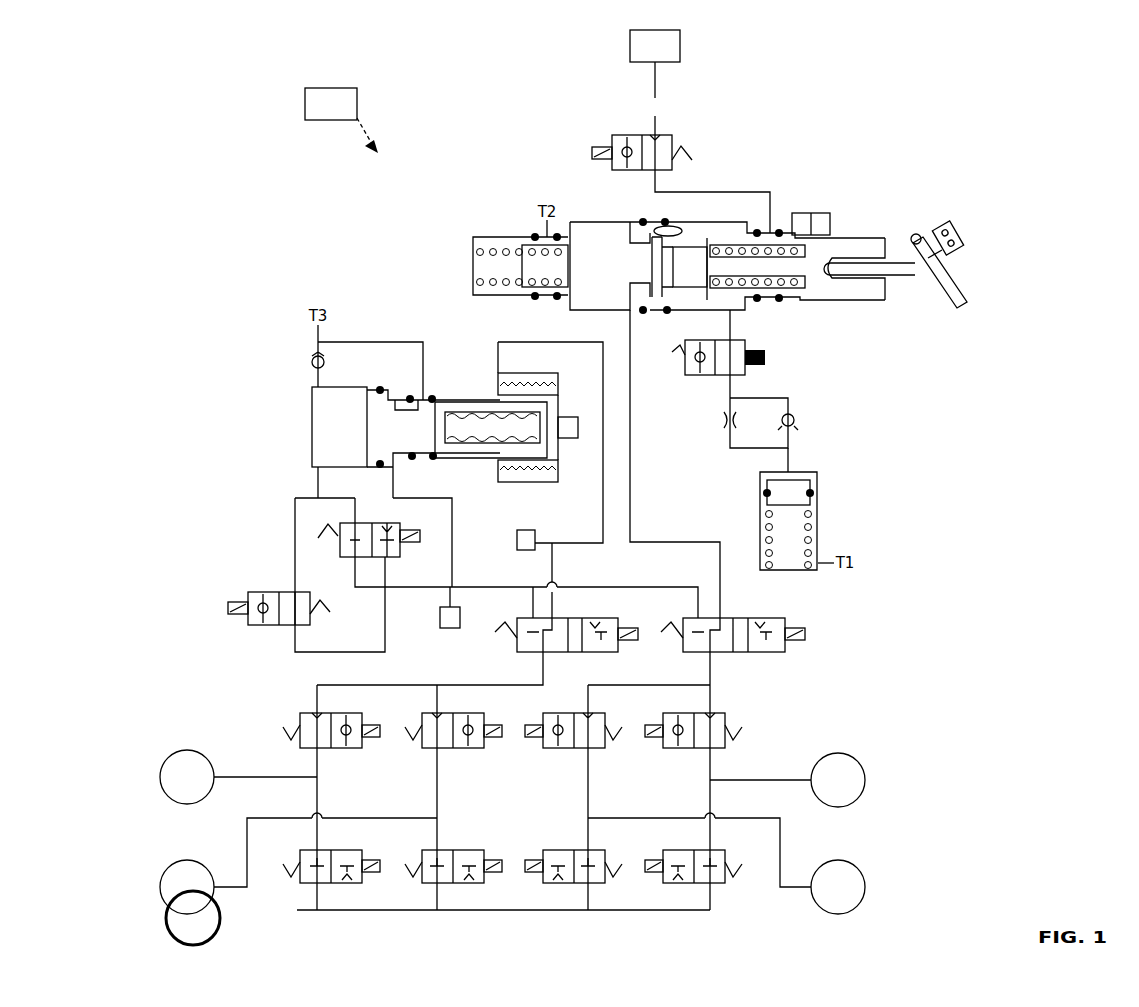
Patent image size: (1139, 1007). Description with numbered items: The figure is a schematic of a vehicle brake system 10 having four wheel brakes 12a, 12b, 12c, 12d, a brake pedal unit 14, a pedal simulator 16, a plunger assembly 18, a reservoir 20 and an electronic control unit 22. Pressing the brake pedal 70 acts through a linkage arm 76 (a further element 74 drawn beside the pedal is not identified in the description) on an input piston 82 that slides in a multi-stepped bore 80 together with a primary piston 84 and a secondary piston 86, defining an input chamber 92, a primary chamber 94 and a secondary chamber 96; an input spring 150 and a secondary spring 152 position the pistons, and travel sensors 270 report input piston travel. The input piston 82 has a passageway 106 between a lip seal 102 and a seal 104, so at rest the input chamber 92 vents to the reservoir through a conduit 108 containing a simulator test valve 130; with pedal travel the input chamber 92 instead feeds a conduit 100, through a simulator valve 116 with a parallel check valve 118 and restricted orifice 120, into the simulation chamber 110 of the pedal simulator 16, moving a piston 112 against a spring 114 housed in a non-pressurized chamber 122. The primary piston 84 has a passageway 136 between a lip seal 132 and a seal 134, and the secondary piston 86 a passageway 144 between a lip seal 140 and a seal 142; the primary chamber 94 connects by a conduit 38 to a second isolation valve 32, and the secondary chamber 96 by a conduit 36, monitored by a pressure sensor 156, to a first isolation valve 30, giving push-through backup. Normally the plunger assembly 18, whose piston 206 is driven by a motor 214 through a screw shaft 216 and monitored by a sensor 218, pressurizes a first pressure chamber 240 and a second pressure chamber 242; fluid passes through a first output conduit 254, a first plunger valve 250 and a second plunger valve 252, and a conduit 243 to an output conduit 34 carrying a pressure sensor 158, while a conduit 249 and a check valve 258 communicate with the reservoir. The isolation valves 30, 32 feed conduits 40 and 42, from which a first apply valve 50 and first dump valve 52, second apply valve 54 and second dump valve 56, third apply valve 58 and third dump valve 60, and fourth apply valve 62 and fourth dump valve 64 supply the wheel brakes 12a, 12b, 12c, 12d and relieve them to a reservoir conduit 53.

The brake system 10 is at (236, 144).
The wheel brake 12a is at (180, 750).
The wheel brake 12b is at (170, 862).
The wheel brake 12c is at (855, 862).
The wheel brake 12d is at (852, 755).
The brake pedal unit 14 is at (910, 144).
The pedal simulator 16 is at (826, 478).
The plunger assembly 18 is at (278, 369).
The reservoir 20 is at (630, 50).
The electronic control unit 22 is at (357, 100).
The first isolation valve 30 is at (604, 654).
The second isolation valve 32 is at (772, 654).
The output conduit 34 is at (634, 586).
The conduit 36 is at (603, 472).
The conduit 38 is at (632, 455).
The conduit 40 is at (540, 672).
The conduit 42 is at (712, 678).
The first apply valve 50 is at (310, 713).
The first dump valve 52 is at (350, 885).
The reservoir conduit 53 is at (398, 912).
The second apply valve 54 is at (432, 713).
The second dump valve 56 is at (480, 885).
The third apply valve 58 is at (578, 713).
The third dump valve 60 is at (595, 885).
The fourth apply valve 62 is at (728, 713).
The fourth dump valve 64 is at (720, 885).
The brake pedal 70 is at (950, 283).
The pedal pivot 74 is at (952, 228).
The linkage arm 76 is at (882, 276).
The multi-stepped bore 80 is at (600, 238).
The input piston 82 is at (862, 240).
The primary piston 84 is at (712, 240).
The secondary piston 86 is at (592, 267).
The input chamber 92 is at (690, 240).
The primary chamber 94 is at (613, 235).
The secondary chamber 96 is at (490, 270).
The conduit 100 is at (730, 392).
The lip seal 102 is at (758, 302).
The seal 104 is at (781, 302).
The passageway 106 is at (782, 234).
The conduit 108 is at (690, 190).
The simulation chamber 110 is at (800, 472).
The piston 112 is at (806, 502).
The spring 114 is at (815, 540).
The simulator valve 116 is at (746, 372).
The check valve 118 is at (795, 418).
The restricted orifice 120 is at (725, 432).
The non-pressurized chamber 122 is at (790, 565).
The simulator test valve 130 is at (612, 135).
The lip seal 132 is at (643, 318).
The seal 134 is at (670, 313).
The passageway 136 is at (664, 228).
The lip seal 140 is at (530, 300).
The seal 142 is at (558, 300).
The passageway 144 is at (492, 254).
The input spring 150 is at (787, 284).
The secondary spring 152 is at (478, 237).
The pressure sensor 156 is at (517, 532).
The pressure sensor 158 is at (442, 630).
The piston 206 is at (378, 437).
The motor 214 is at (506, 366).
The screw shaft 216 is at (483, 427).
The sensor 218 is at (574, 415).
The first pressure chamber 240 is at (322, 426).
The second pressure chamber 242 is at (398, 460).
The conduit 243 is at (452, 546).
The conduit 249 is at (396, 340).
The first plunger valve 250 is at (402, 558).
The second plunger valve 252 is at (255, 592).
The first output conduit 254 is at (318, 480).
The check valve 258 is at (312, 357).
The travel sensors 270 is at (808, 213).